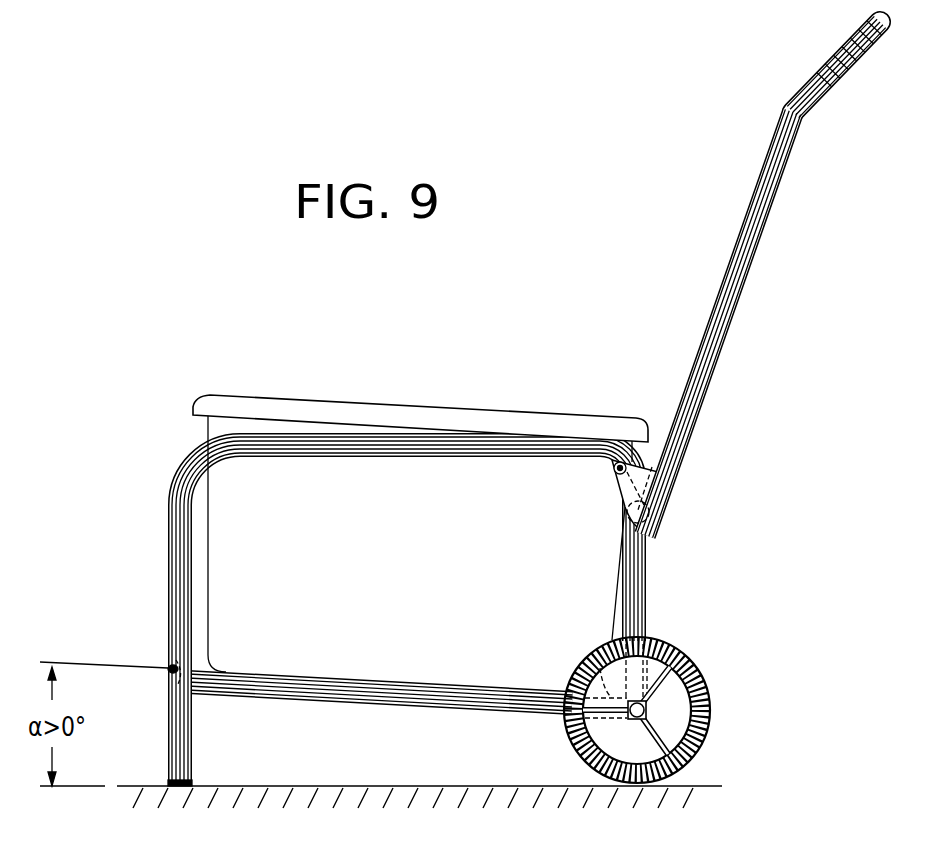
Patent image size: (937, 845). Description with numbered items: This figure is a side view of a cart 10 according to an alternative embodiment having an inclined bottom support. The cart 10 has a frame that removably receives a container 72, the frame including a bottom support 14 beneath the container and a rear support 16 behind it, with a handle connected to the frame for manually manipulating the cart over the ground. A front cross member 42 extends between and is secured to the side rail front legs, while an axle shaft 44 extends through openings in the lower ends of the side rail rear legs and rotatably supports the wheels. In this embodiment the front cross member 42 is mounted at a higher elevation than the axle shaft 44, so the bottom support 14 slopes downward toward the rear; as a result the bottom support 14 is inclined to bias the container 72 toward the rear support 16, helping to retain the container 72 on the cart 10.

The cart 10 is at (485, 401).
The bottom support 14 is at (313, 694).
The rear support 16 is at (641, 514).
The front cross member 42 is at (170, 668).
The axle shaft 44 is at (650, 707).
The container 72 is at (405, 413).